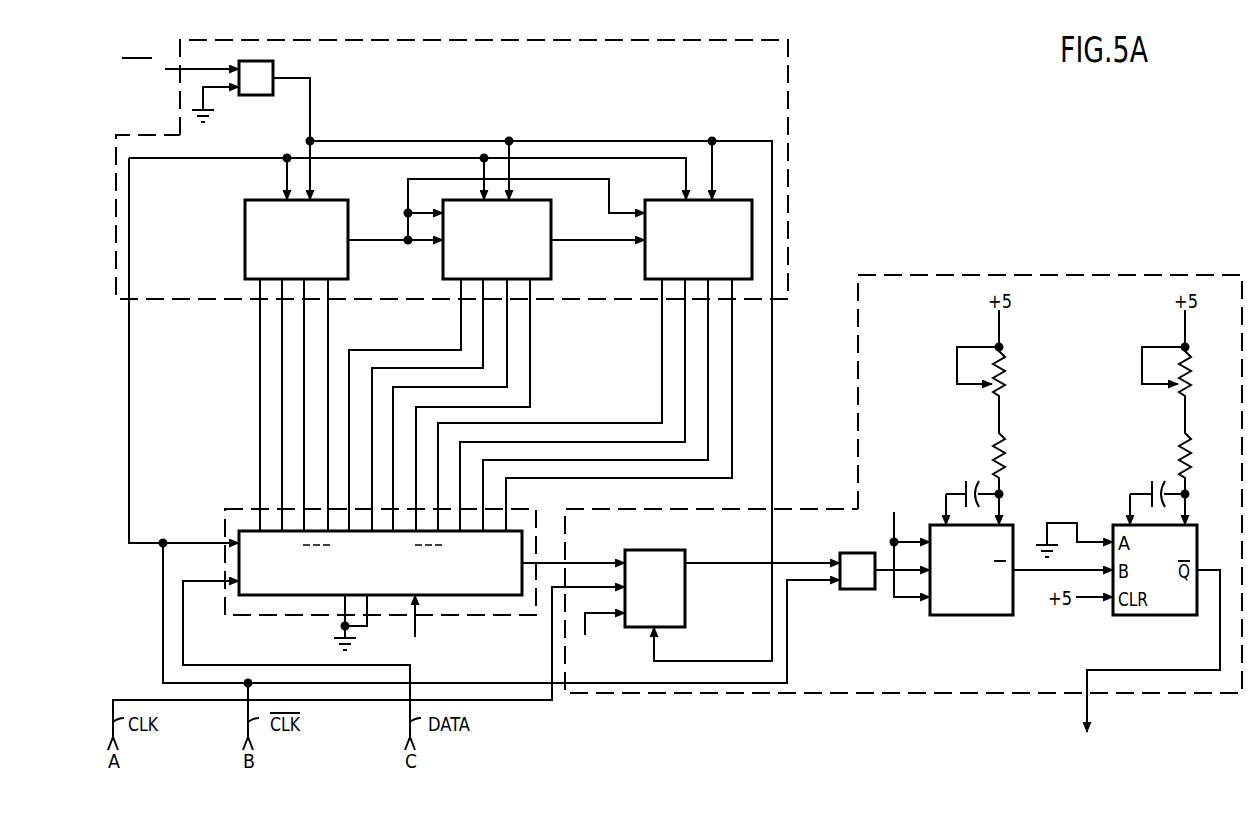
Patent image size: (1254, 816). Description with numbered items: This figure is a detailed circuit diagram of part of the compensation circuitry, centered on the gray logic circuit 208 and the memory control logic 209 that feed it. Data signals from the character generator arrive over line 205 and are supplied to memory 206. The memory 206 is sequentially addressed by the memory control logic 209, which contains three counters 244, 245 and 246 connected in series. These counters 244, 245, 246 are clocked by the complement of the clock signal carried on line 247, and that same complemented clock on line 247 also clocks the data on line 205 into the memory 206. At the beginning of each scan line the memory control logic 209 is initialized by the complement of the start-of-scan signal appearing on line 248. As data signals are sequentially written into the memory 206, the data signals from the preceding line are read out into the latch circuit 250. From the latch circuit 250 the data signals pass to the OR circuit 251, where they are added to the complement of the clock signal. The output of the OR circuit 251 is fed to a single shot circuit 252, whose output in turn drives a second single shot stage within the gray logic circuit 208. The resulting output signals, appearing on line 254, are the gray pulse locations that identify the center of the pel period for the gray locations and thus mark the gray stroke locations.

The memory control logic 209 is at (788, 75).
The line 248 is at (232, 68).
The counter 244 is at (356, 193).
The counter 245 is at (551, 218).
The counter 246 is at (756, 190).
The line 247 is at (129, 445).
The memory 206 is at (228, 509).
The line 205 is at (234, 665).
The latch circuit 250 is at (678, 549).
The OR circuit 251 is at (862, 592).
The gray logic circuit 208 is at (953, 275).
The single shot circuit 252 is at (966, 617).
The line 254 is at (1087, 671).